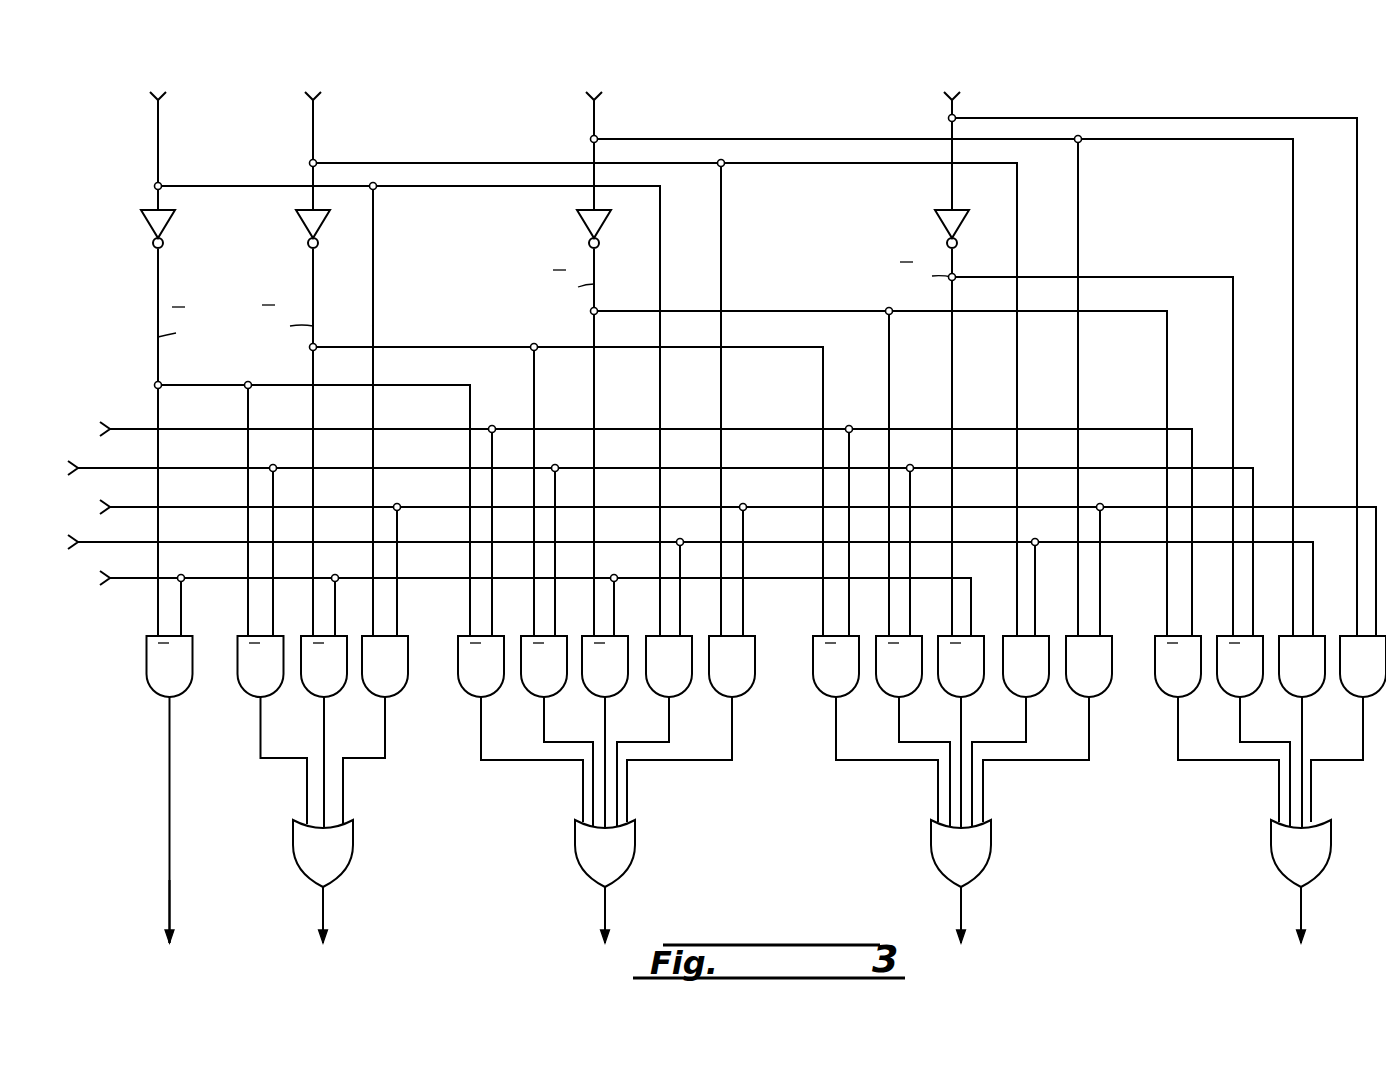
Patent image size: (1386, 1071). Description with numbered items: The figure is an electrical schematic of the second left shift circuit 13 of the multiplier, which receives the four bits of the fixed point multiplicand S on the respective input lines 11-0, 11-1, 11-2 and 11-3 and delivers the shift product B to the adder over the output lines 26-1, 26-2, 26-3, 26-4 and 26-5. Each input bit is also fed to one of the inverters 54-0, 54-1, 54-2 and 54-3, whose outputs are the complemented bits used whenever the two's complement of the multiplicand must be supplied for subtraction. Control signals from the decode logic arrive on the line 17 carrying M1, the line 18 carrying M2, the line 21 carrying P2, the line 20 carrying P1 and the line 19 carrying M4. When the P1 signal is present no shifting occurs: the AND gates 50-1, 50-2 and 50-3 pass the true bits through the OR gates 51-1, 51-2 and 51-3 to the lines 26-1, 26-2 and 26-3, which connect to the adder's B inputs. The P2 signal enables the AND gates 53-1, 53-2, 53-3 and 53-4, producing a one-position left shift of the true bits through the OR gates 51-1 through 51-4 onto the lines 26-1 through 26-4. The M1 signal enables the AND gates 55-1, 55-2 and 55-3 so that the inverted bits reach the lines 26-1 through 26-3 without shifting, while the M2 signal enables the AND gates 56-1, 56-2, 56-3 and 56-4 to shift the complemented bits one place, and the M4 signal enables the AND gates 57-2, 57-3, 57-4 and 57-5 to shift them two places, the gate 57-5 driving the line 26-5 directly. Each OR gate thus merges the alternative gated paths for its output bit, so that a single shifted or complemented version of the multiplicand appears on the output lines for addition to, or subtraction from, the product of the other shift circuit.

The left shift circuit 13 is at (126, 320).
The line 11-3 is at (158, 128).
The line 11-2 is at (313, 128).
The line 11-1 is at (594, 128).
The line 11-0 is at (952, 120).
The inverter 54-3 is at (150, 232).
The inverter 54-2 is at (305, 232).
The inverter 54-1 is at (586, 232).
The inverter 54-0 is at (944, 232).
The line 17 is at (140, 428).
The line 18 is at (141, 467).
The line 21 is at (141, 506).
The line 20 is at (143, 542).
The line 19 is at (141, 578).
The AND gate 57-5 is at (151, 689).
The AND gate 56-4 is at (242, 689).
The AND gate 57-4 is at (306, 689).
The AND gate 53-4 is at (367, 689).
The AND gate 55-3 is at (463, 689).
The AND gate 56-3 is at (526, 689).
The AND gate 57-3 is at (587, 689).
The AND gate 50-3 is at (651, 689).
The AND gate 53-3 is at (714, 689).
The AND gate 55-2 is at (818, 689).
The AND gate 56-2 is at (881, 689).
The AND gate 57-2 is at (943, 689).
The AND gate 50-2 is at (1008, 689).
The AND gate 53-2 is at (1071, 689).
The AND gate 55-1 is at (1160, 689).
The AND gate 56-1 is at (1222, 689).
The AND gate 50-1 is at (1284, 689).
The AND gate 53-1 is at (1345, 689).
The OR gate 51-4 is at (323, 853).
The OR gate 51-3 is at (605, 853).
The OR gate 51-2 is at (961, 853).
The OR gate 51-1 is at (1301, 853).
The output line 26-5 is at (170, 910).
The output line 26-4 is at (323, 910).
The output line 26-3 is at (605, 910).
The output line 26-2 is at (961, 910).
The output line 26-1 is at (1301, 910).